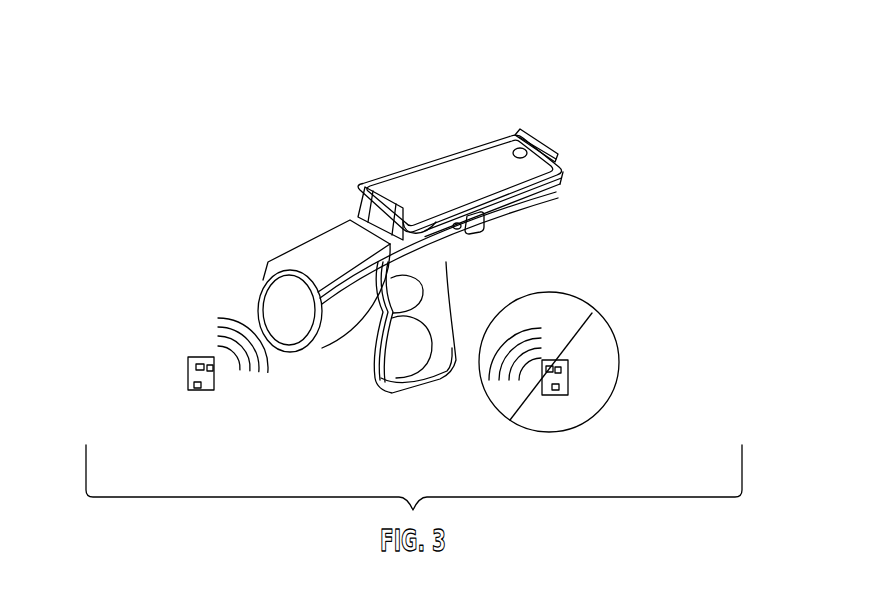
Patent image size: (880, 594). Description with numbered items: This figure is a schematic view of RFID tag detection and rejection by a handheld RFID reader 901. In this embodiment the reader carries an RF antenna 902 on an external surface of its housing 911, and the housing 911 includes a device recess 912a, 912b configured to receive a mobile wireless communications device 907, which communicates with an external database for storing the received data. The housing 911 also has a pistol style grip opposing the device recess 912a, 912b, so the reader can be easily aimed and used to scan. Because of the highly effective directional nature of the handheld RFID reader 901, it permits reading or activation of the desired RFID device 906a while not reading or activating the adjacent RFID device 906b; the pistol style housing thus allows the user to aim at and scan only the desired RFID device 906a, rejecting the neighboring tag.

The handheld RFID reader 901 is at (278, 207).
The RF antenna 902 is at (298, 335).
The mobile wireless communications device 907 is at (476, 160).
The housing 911 is at (442, 303).
The device recess 912a is at (376, 207).
The device recess 912b is at (590, 144).
The desired RFID device 906a is at (188, 376).
The adjacent RFID device 906b is at (568, 376).